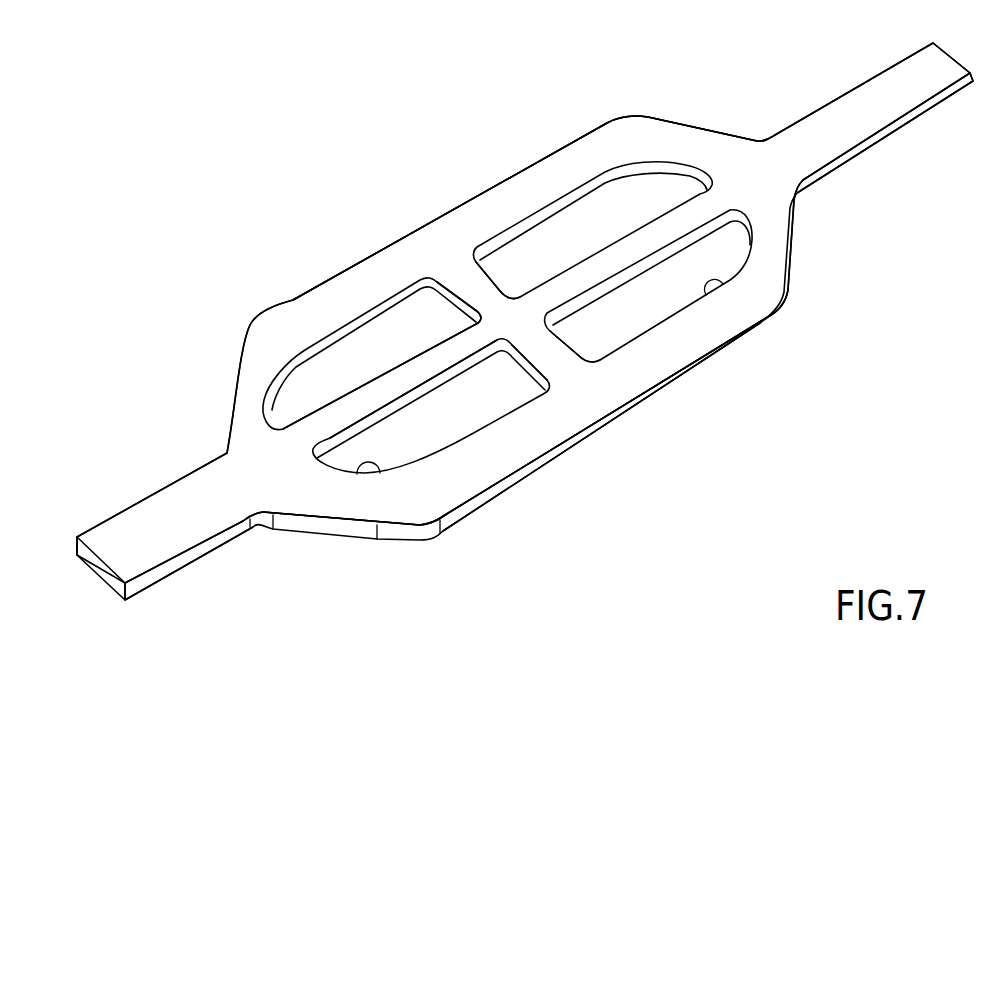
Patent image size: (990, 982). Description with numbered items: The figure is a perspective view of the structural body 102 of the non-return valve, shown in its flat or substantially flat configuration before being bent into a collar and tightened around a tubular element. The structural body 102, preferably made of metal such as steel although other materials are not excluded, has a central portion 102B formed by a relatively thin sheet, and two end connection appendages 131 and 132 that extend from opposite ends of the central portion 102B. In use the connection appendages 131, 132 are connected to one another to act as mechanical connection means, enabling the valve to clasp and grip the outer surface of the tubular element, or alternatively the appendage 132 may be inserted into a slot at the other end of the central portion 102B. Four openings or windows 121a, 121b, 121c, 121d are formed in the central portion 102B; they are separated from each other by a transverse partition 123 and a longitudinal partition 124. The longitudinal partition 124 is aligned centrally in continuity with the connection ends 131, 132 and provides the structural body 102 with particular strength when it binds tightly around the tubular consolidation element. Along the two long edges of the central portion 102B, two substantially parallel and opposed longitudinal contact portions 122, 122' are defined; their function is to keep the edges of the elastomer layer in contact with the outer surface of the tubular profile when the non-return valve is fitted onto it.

The structural body 102 is at (352, 243).
The central portion 102B is at (447, 230).
The opening 121a is at (316, 346).
The opening 121b is at (388, 472).
The opening 121c is at (590, 181).
The opening 121d is at (730, 284).
The longitudinal contact portion 122 is at (525, 208).
The longitudinal contact portion 122' is at (514, 424).
The transverse partition 123 is at (550, 353).
The longitudinal partition 124 is at (443, 361).
The end connection appendage 131 is at (130, 525).
The end connection appendage 132 is at (853, 106).